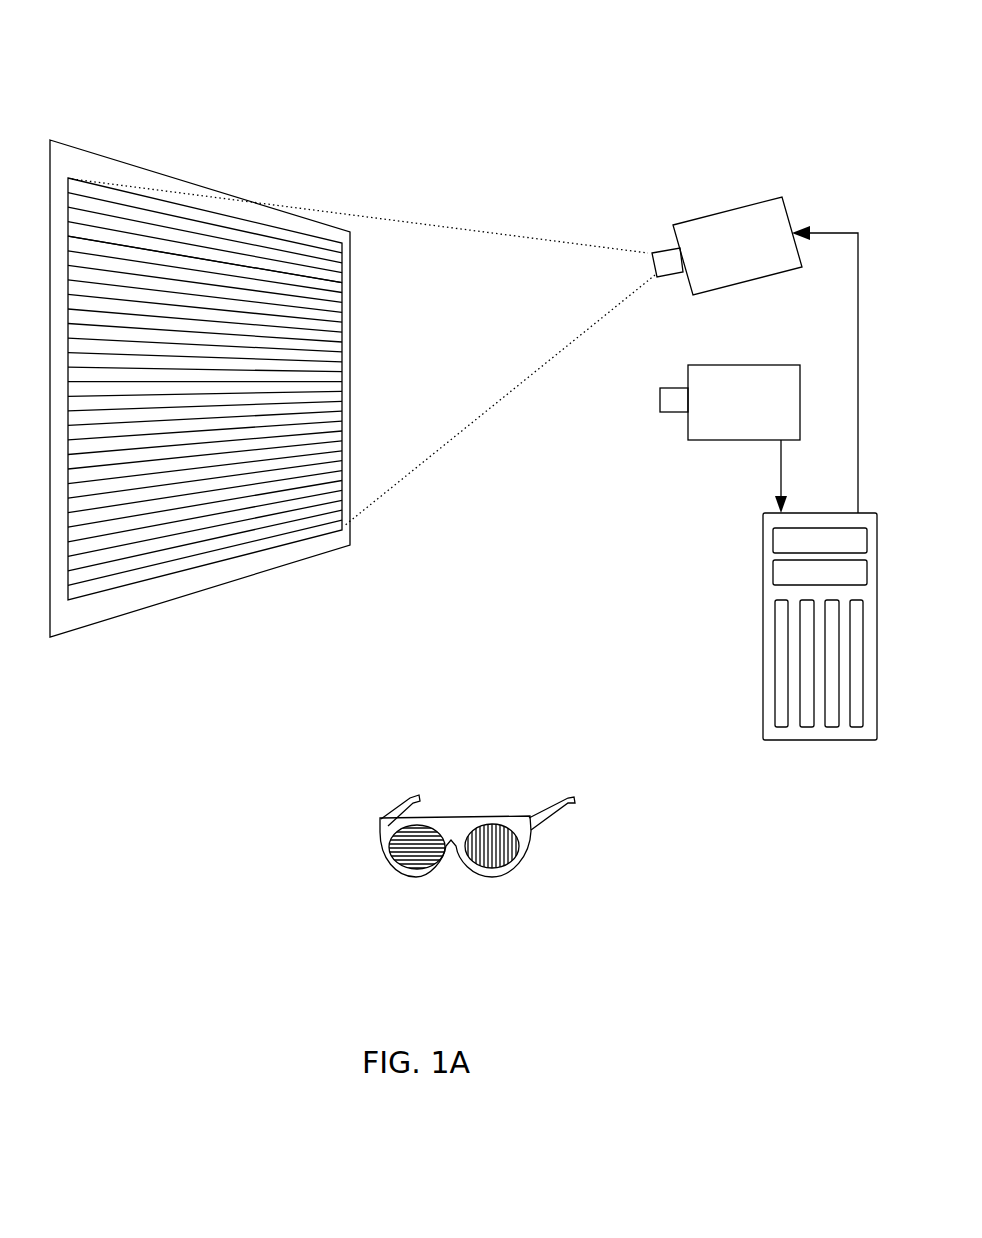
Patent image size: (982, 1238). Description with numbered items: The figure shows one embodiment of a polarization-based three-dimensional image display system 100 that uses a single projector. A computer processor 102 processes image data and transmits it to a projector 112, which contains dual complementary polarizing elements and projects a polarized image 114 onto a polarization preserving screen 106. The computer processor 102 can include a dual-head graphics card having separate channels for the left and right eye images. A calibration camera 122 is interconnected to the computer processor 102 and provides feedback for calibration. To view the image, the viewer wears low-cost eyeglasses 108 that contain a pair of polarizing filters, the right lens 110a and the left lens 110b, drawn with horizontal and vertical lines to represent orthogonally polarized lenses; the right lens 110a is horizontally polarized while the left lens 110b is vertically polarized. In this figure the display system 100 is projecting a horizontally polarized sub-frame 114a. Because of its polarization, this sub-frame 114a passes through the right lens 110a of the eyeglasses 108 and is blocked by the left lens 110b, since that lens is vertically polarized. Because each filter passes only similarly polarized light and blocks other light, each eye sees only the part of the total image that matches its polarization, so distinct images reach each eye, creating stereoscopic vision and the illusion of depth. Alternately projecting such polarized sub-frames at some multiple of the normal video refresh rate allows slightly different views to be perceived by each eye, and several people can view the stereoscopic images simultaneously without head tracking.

The polarization-based 3-D image display system 100 is at (414, 74).
The computer processor 102 is at (767, 609).
The polarization preserving screen 106 is at (206, 579).
The eyeglasses 108 is at (457, 828).
The right lens 110a is at (395, 865).
The left lens 110b is at (522, 858).
The projector 112 is at (718, 233).
The polarized image 114 is at (330, 383).
The horizontally polarized sub-frame 114a is at (165, 237).
The calibration camera 122 is at (710, 418).